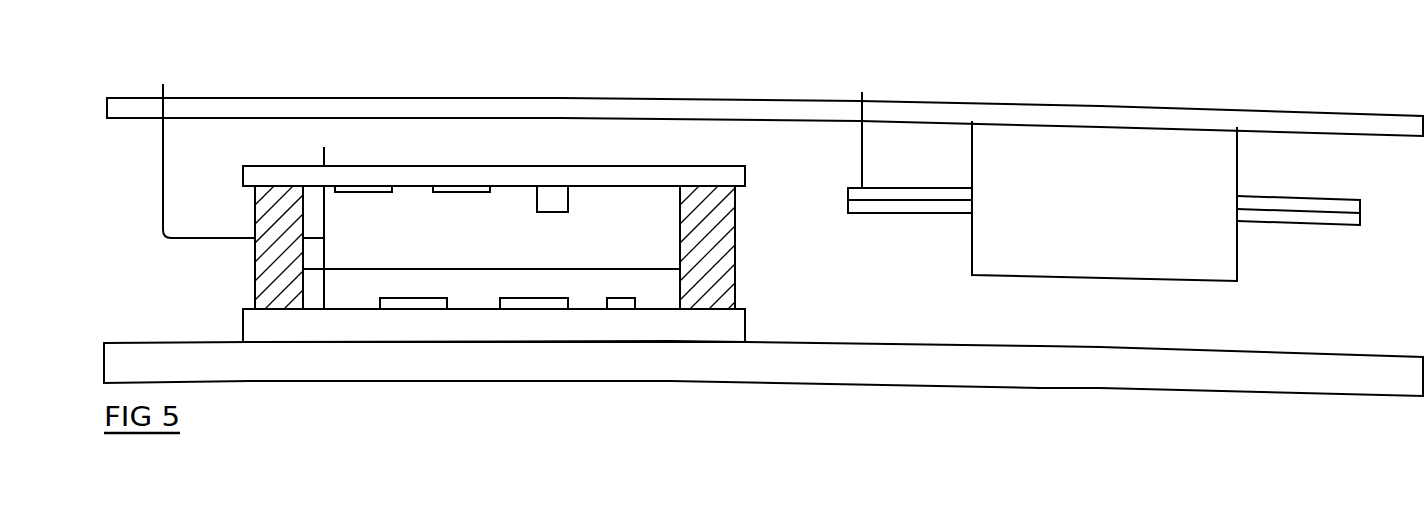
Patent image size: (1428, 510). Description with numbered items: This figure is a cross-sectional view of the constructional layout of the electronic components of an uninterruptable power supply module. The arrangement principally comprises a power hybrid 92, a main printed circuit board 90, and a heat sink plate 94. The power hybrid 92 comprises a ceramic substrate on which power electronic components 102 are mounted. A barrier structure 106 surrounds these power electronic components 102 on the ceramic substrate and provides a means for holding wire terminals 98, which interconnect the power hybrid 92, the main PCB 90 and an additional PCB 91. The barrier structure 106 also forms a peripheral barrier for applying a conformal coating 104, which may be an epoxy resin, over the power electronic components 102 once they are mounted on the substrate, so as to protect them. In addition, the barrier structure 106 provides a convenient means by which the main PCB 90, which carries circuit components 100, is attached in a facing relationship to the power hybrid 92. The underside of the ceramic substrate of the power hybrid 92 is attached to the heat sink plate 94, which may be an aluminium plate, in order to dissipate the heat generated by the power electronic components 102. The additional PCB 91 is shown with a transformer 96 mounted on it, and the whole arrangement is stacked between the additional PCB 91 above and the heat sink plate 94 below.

The main printed circuit board 90 is at (617, 175).
The additional printed circuit board 91 is at (207, 105).
The power hybrid 92 is at (668, 330).
The heat sink plate 94 is at (1185, 379).
The transformer 96 is at (1088, 158).
The wire terminals 98 is at (325, 218).
The circuit components 100 is at (450, 190).
The power electronic components 102 is at (412, 302).
The conformal coating 104 is at (620, 285).
The barrier structure 106 is at (727, 245).